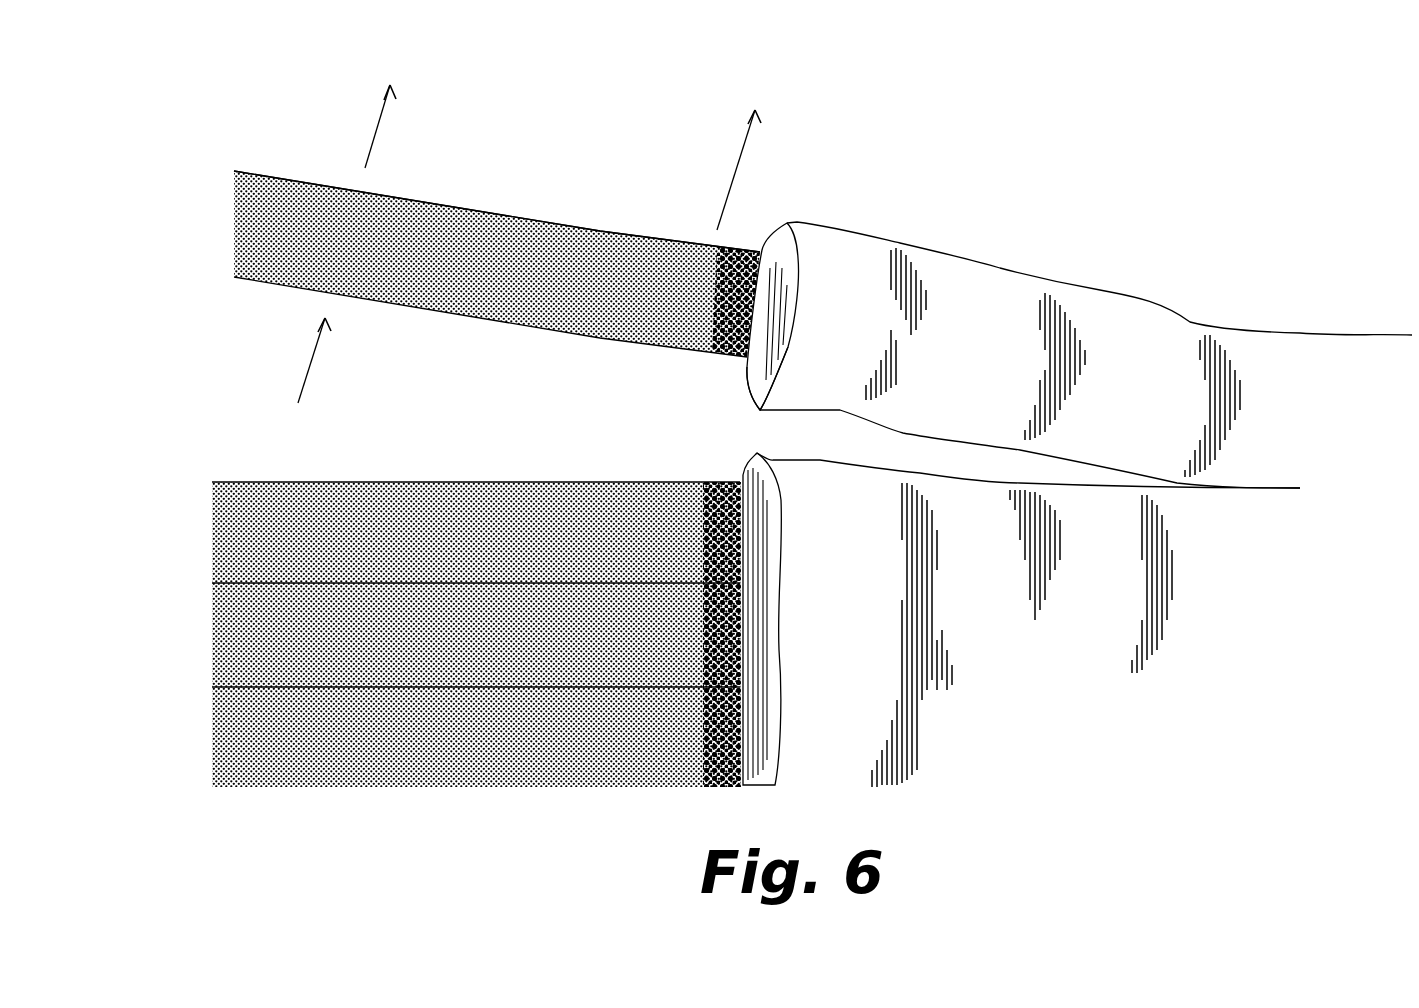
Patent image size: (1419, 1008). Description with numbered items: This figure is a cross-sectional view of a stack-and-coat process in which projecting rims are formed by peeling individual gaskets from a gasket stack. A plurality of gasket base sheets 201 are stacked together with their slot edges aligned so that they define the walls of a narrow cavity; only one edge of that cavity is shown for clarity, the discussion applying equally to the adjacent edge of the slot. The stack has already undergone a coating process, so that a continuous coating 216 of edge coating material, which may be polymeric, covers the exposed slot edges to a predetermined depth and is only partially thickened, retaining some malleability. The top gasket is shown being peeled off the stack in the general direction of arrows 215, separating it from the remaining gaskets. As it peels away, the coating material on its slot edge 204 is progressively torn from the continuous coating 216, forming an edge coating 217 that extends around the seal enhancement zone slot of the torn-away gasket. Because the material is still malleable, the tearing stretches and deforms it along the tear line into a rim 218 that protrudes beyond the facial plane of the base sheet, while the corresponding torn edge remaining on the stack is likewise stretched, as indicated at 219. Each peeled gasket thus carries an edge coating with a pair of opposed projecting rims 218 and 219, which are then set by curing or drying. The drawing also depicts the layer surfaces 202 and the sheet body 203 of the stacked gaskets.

The gasket base sheet 201 is at (540, 274).
The surface 202 is at (632, 230).
The fibrous web layer 203 is at (533, 330).
The slot edge 204 is at (752, 330).
The arrows 215 is at (368, 143).
The continuous coating 216 is at (1103, 626).
The edge coating 217 is at (1007, 355).
The rim 218 is at (760, 392).
The torn edge 219 is at (783, 223).